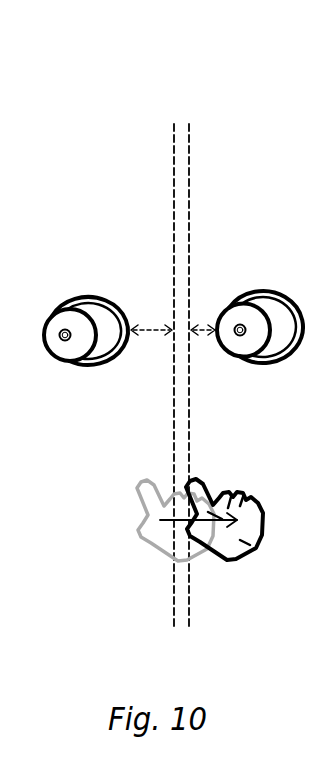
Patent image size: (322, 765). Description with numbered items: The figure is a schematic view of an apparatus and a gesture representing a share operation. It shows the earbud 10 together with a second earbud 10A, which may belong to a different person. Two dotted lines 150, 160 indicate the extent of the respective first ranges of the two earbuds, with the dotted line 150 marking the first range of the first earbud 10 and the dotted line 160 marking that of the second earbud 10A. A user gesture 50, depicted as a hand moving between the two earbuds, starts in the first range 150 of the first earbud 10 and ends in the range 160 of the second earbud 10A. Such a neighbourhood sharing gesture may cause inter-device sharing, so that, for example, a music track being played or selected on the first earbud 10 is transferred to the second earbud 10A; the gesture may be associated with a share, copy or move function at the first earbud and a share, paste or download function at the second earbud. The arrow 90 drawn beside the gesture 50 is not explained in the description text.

The dotted line 150 is at (173, 118).
The dotted line 160 is at (189, 118).
The earbud 10 is at (113, 297).
The second earbud 10A is at (267, 290).
The movement gesture 90 is at (182, 497).
The user gesture 50 is at (243, 542).